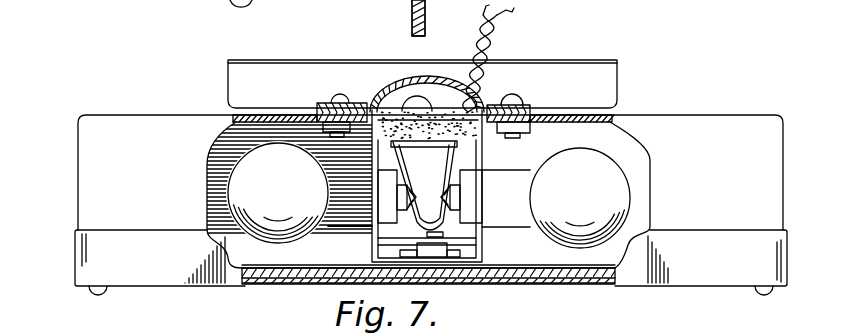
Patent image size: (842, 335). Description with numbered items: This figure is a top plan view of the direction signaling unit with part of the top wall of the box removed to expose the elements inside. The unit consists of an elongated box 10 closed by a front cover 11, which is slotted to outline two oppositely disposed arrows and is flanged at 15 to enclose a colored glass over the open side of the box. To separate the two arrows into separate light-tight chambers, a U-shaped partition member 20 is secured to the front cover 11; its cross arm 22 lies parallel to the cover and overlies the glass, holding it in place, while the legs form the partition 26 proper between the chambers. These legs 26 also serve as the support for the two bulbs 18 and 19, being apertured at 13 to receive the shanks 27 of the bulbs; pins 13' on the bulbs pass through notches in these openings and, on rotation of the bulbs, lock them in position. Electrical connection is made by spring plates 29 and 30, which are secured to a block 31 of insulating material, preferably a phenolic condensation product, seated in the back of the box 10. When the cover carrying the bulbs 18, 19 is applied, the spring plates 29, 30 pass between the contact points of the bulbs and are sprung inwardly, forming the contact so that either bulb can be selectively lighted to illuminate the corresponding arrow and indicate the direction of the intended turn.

The elongated box 10 is at (430, 145).
The front cover 11 is at (184, 212).
The apertures 13 is at (429, 195).
The pins 13' is at (418, 189).
The cover flange 15 is at (742, 201).
The bulb 18 is at (247, 190).
The bulb 19 is at (597, 172).
The partition member 20 is at (483, 237).
The cross arm 22 is at (374, 247).
The partition 26 is at (486, 143).
The shanks 27 is at (426, 196).
The spring plate 29 is at (377, 212).
The spring plate 30 is at (462, 213).
The block 31 is at (397, 110).